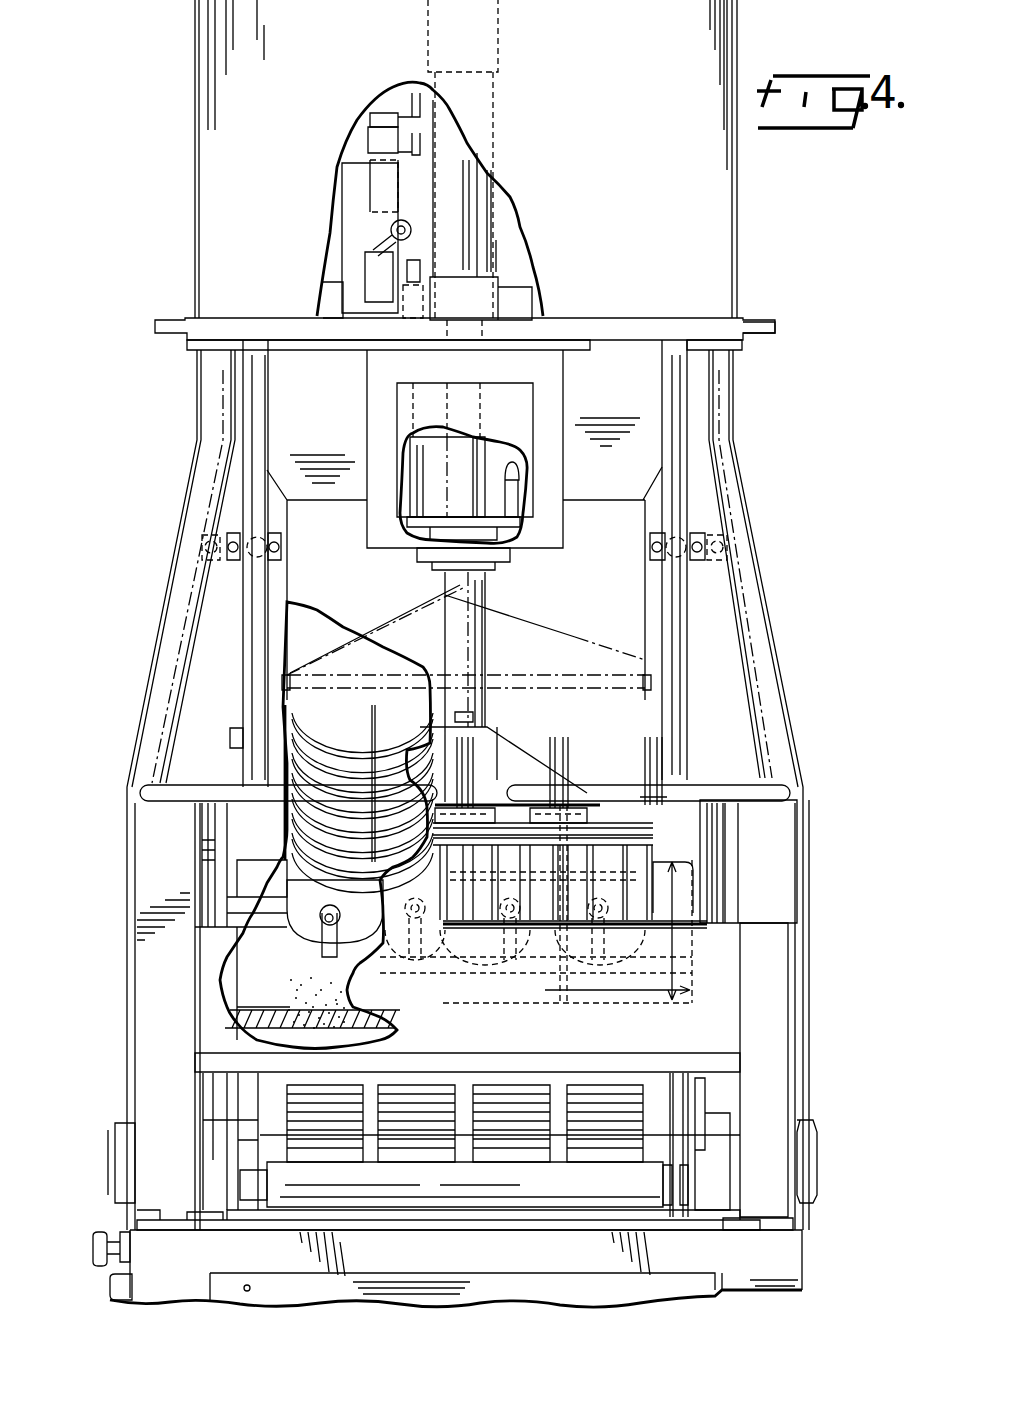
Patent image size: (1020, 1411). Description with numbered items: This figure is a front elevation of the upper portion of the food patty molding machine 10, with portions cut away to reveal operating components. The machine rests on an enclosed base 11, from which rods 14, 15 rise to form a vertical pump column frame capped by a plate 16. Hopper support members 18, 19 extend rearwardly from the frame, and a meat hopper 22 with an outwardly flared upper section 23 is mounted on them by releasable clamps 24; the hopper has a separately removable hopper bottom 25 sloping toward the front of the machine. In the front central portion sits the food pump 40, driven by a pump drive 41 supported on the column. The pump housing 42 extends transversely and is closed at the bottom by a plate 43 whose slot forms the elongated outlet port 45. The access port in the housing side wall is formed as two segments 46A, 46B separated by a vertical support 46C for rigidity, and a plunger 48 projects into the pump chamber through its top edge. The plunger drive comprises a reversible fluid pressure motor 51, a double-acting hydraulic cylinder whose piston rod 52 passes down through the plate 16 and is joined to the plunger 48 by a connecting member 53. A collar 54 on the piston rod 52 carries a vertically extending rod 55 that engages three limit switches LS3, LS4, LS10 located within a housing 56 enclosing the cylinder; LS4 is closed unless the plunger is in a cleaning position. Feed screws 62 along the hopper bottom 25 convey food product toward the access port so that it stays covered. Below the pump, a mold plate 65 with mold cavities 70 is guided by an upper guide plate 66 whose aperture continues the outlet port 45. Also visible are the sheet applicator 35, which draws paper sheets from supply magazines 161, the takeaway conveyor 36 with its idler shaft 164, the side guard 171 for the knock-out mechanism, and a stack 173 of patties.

The food patty molding machine 10 is at (176, 232).
The base 11 is at (790, 1262).
The rod 14 is at (246, 656).
The rod 15 is at (688, 678).
The plate 16 is at (746, 340).
The hopper support member 18 is at (270, 565).
The hopper support member 19 is at (660, 565).
The meat hopper 22 is at (466, 630).
The outwardly flared upper section 23 is at (625, 345).
The releasable clamp 24 is at (202, 552).
The hopper bottom 25 is at (692, 957).
The sheet applicator 35 is at (635, 748).
The takeaway conveyor 36 is at (590, 1215).
The food pump 40 is at (585, 622).
The pump drive 41 is at (516, 195).
The pump housing 42 is at (690, 840).
The plate 43 is at (230, 1003).
The outlet port 45 is at (428, 1022).
The access port segment 46A is at (295, 925).
The access port segment 46B is at (520, 1020).
The vertical support 46C is at (451, 971).
The plunger 48 is at (287, 967).
The reversible fluid pressure motor 51 is at (486, 228).
The piston rod 52 is at (480, 452).
The connecting member 53 is at (512, 717).
The collar 54 is at (545, 520).
The rod 55 is at (412, 495).
The housing 56 is at (722, 32).
The feed screw 62 is at (318, 722).
The mold plate 65 is at (240, 1023).
The upper guide plate 66 is at (267, 1013).
The mold cavity 70 is at (290, 1047).
The supply magazine 161 is at (582, 745).
The idler shaft 164 is at (520, 1208).
The side guard 171 is at (150, 1072).
The stack 173 is at (612, 1088).
The limit switch LS3 is at (372, 158).
The limit switch LS4 is at (375, 118).
The limit switch LS10 is at (370, 268).